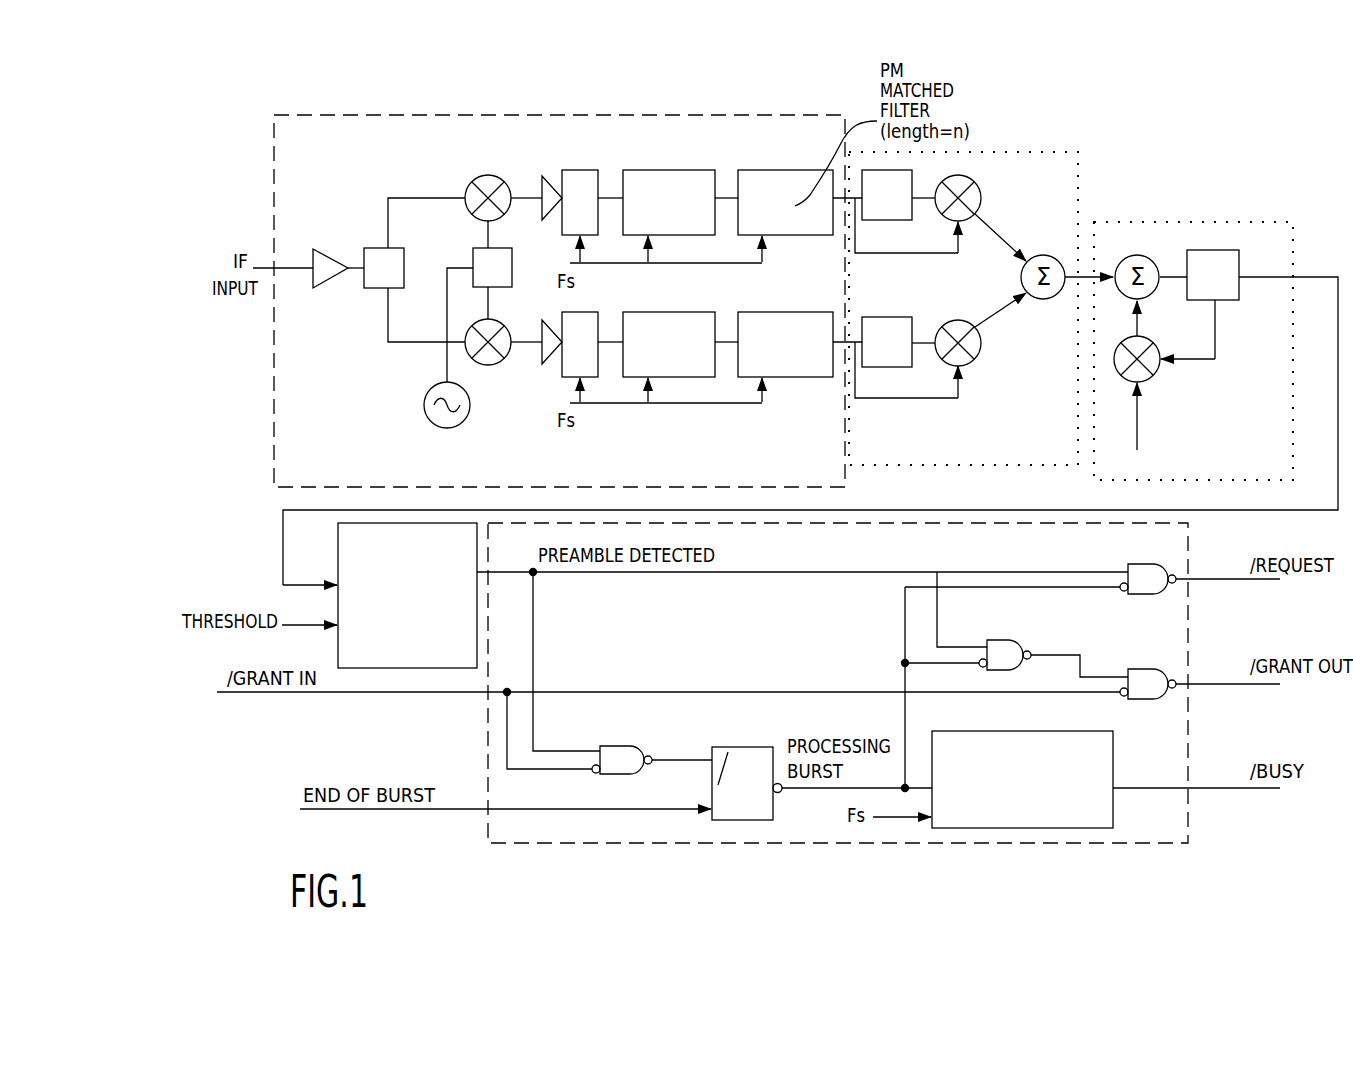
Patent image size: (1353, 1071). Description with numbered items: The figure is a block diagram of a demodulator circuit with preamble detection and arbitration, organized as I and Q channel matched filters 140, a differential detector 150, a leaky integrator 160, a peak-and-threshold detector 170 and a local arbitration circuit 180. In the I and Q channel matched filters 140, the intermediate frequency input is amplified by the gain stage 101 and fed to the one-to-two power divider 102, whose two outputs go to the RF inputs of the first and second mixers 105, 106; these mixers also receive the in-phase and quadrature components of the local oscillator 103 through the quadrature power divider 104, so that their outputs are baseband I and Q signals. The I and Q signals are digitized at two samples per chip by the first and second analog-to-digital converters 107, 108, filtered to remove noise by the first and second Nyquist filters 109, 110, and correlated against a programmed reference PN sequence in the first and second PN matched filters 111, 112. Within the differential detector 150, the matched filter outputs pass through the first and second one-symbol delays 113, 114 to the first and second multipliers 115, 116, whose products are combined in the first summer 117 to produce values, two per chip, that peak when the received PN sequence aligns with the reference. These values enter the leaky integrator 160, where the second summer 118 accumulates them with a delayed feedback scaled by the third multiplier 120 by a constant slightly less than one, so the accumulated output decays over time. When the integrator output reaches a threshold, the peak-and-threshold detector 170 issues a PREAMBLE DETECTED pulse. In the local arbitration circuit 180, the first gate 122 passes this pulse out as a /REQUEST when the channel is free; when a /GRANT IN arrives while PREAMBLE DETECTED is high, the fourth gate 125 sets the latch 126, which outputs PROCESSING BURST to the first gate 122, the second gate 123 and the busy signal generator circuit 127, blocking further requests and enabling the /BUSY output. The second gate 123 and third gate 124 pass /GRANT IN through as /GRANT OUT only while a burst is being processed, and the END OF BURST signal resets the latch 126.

The gain stage 101 is at (330, 250).
The 1:2 power divider 102 is at (372, 248).
The local oscillator 103 is at (424, 405).
The quadrature power divider 104 is at (476, 248).
The first mixer 105 is at (500, 148).
The second mixer 106 is at (483, 364).
The first analog-to-digital converter 107 is at (590, 150).
The second analog-to-digital converter 108 is at (580, 312).
The first Nyquist filter 109 is at (674, 170).
The second Nyquist filter 110 is at (655, 312).
The first pseudo-noise matched filter 111 is at (757, 170).
The second pseudo-noise matched filter 112 is at (779, 312).
The first one-symbol delay 113 is at (878, 220).
The second one-symbol delay 114 is at (873, 317).
The first multiplier 115 is at (981, 188).
The second multiplier 116 is at (978, 353).
The first summer 117 is at (1020, 277).
The second summer 118 is at (1125, 256).
The third multiplier 120 is at (1155, 372).
The first gate 122 is at (1156, 564).
The second gate 123 is at (1003, 640).
The third gate 124 is at (1133, 669).
The fourth gate 125 is at (615, 746).
The latch 126 is at (730, 747).
The busy signal generator circuit 127 is at (978, 731).
The I and Q channel matched filters 140 is at (580, 115).
The differential detector 150 is at (1025, 152).
The leaky integrator 160 is at (1178, 222).
The peak-and-threshold detector 170 is at (338, 531).
The local arbitration circuit 180 is at (1010, 843).